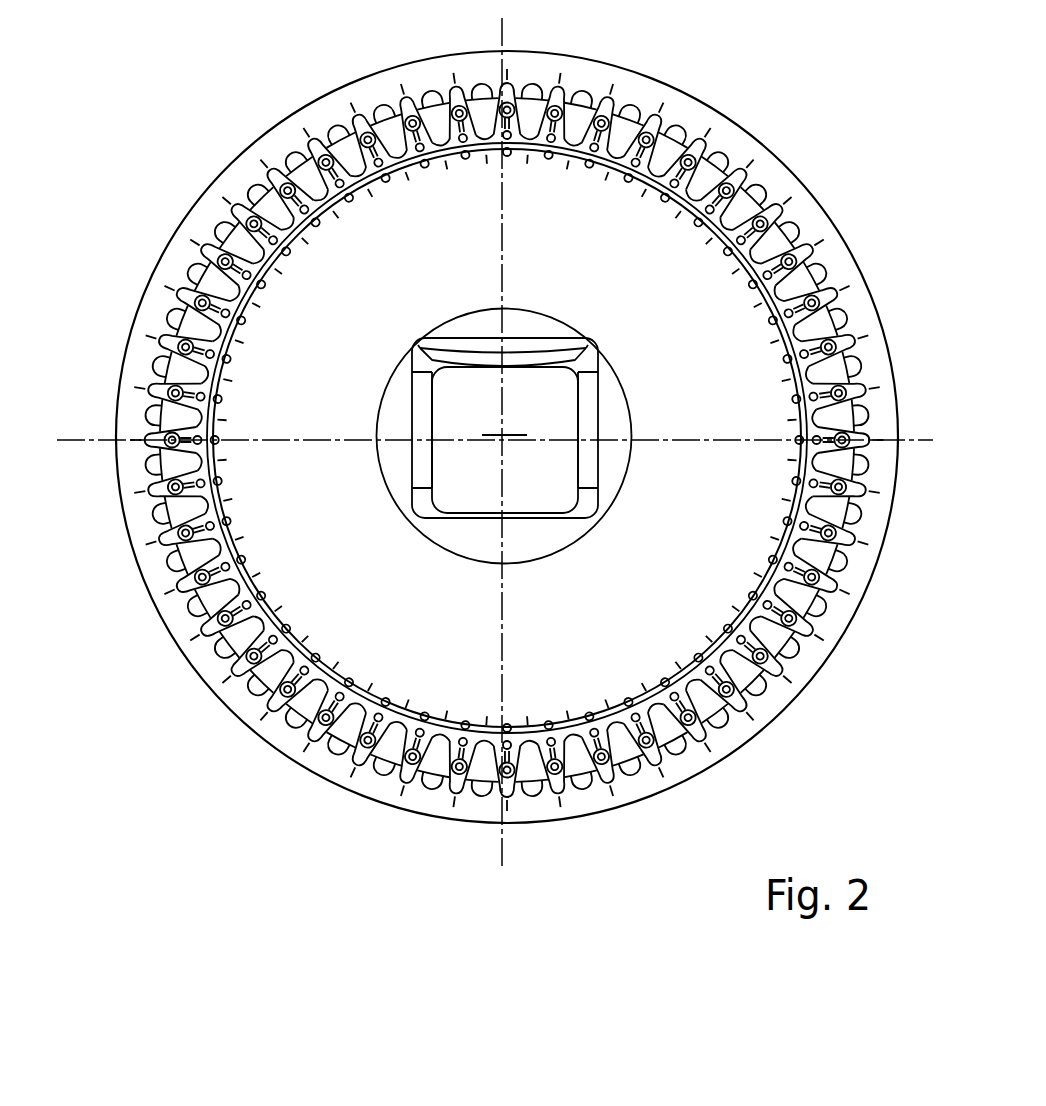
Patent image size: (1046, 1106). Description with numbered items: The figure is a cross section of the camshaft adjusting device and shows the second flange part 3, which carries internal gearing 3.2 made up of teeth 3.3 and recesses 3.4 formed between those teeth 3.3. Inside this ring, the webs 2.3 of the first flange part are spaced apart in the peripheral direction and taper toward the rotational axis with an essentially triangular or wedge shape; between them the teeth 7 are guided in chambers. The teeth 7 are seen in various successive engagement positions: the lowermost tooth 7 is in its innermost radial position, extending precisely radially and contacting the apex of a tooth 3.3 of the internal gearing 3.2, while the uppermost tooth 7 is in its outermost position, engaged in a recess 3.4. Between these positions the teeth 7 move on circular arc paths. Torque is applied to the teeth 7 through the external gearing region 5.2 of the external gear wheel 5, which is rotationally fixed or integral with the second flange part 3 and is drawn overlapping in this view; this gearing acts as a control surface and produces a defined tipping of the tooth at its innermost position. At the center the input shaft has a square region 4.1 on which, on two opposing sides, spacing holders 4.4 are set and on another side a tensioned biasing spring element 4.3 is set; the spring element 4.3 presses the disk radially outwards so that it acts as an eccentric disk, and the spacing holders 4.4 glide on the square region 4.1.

The webs 2.3 is at (345, 130).
The second flange part 3 is at (638, 90).
The internal gearing 3.2 is at (662, 108).
The teeth 3.3 is at (717, 160).
The recesses 3.4 is at (778, 222).
The square region 4.1 is at (562, 417).
The biasing spring element 4.3 is at (570, 343).
The spacing holders 4.4 is at (590, 398).
The external gear wheel 5 is at (343, 324).
The external gearing region 5.2 is at (353, 188).
The teeth 7 is at (288, 163).